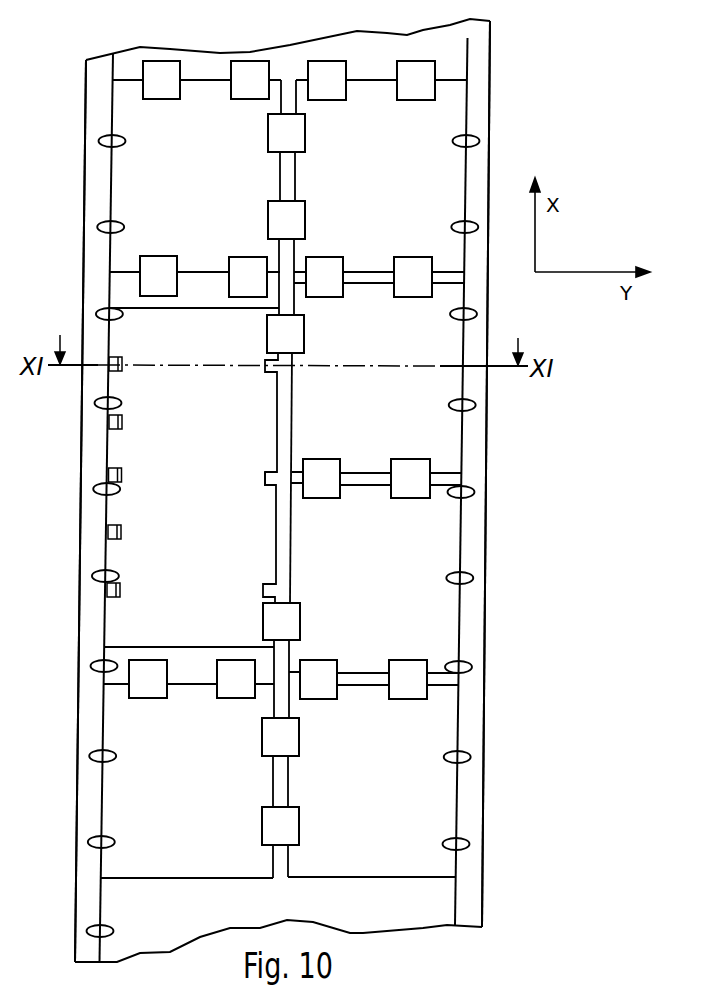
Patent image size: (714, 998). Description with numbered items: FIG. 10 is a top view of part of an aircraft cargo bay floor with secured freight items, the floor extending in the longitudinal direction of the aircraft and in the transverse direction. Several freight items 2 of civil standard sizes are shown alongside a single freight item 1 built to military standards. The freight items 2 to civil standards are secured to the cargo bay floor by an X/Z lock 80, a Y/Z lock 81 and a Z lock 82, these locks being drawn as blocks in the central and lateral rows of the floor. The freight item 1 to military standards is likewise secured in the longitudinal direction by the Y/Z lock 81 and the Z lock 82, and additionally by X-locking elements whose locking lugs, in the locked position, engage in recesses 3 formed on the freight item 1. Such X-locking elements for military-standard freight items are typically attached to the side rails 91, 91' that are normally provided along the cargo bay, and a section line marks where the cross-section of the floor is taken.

The freight item to military standards 1 is at (200, 491).
The freight items to civil standard sizes 2 is at (205, 190).
The recesses 3 is at (283, 474).
The X/Z lock 80 is at (406, 668).
The Y/Z lock 81 is at (300, 827).
The Z lock 82 is at (468, 845).
The side rail 91 is at (503, 474).
The side rail 91' is at (58, 511).